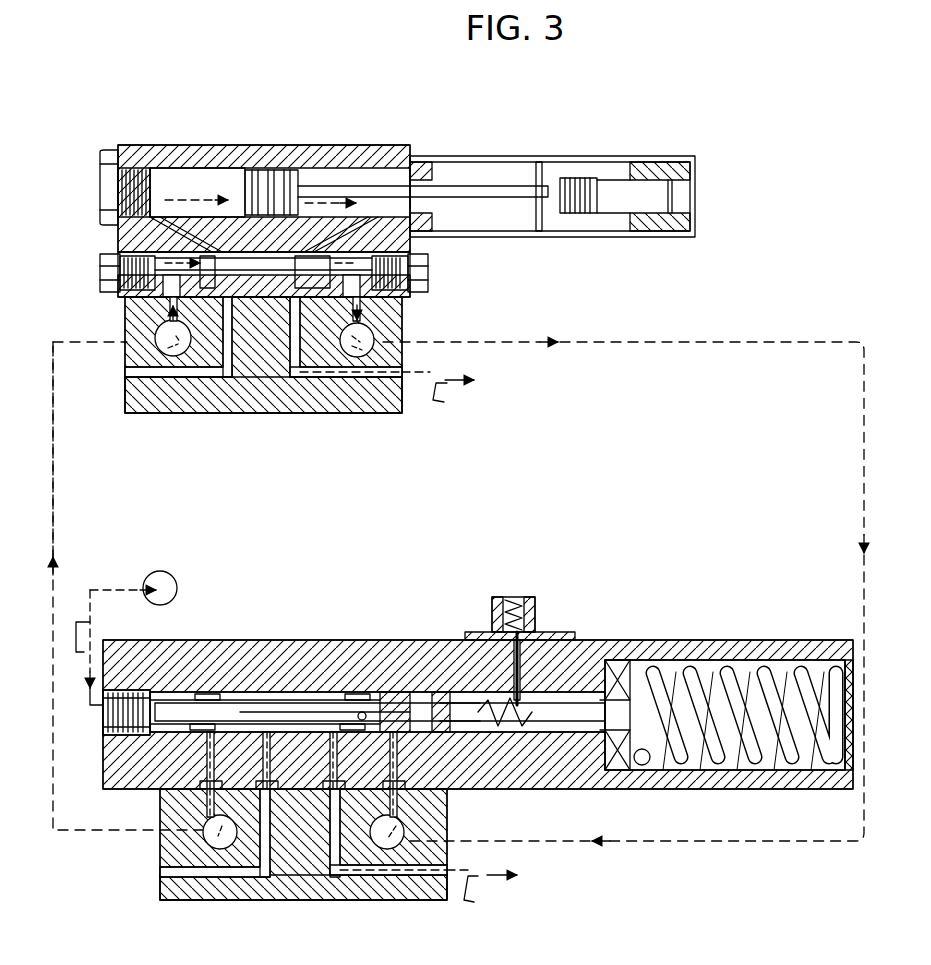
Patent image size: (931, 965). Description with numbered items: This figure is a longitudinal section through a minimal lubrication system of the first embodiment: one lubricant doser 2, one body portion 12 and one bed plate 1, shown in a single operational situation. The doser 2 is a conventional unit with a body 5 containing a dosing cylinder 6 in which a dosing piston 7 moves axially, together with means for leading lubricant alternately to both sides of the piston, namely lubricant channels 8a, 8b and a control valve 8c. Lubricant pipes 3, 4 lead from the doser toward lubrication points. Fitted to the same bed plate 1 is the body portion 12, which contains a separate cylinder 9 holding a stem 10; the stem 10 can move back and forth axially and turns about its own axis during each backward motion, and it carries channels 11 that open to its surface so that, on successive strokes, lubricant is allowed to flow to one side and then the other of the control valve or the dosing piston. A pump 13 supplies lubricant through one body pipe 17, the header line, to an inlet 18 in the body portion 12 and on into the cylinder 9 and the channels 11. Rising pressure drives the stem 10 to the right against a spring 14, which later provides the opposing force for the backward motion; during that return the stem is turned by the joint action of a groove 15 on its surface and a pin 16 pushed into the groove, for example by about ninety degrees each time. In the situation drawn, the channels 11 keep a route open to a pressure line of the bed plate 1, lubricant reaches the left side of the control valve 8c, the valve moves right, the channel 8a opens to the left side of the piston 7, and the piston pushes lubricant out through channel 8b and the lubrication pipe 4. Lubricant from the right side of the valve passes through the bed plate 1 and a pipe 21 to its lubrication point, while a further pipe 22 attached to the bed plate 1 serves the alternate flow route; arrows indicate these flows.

The bed plate 1 is at (258, 398).
The lubricant doser 2 is at (143, 136).
The lubricant pipe 3 is at (127, 372).
The lubrication pipe 4 is at (438, 398).
The body 5 is at (360, 145).
The dosing cylinder 6 is at (195, 185).
The dosing piston 7 is at (272, 172).
The lubricant channel 8a is at (120, 254).
The lubricant channel 8b is at (420, 252).
The control valve 8c is at (268, 272).
The cylinder 9 is at (318, 688).
The stem 10 is at (285, 695).
The channels 11 is at (197, 697).
The body portion 12 is at (437, 652).
The pump 13 is at (168, 572).
The spring 14 is at (700, 666).
The groove 15 is at (516, 727).
The pin 16 is at (542, 636).
The body pipe 17 is at (77, 647).
The inlet 18 is at (106, 735).
The pipe 21 is at (482, 895).
The pipe 22 is at (162, 872).